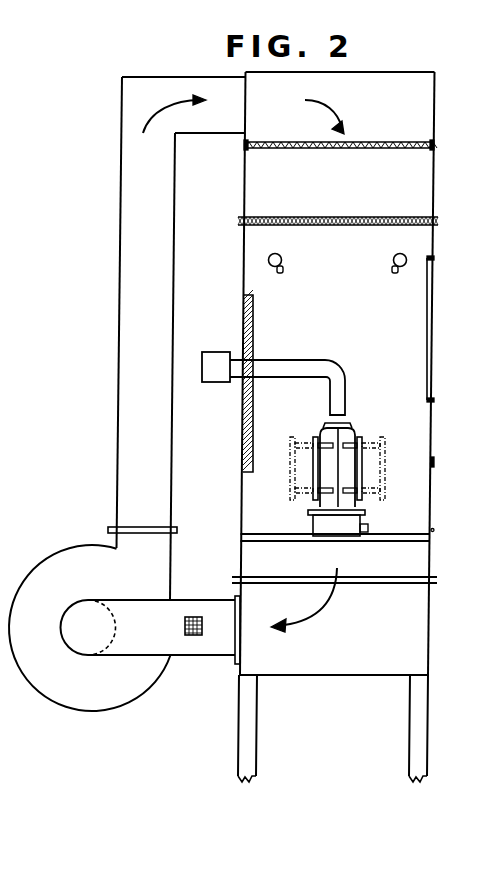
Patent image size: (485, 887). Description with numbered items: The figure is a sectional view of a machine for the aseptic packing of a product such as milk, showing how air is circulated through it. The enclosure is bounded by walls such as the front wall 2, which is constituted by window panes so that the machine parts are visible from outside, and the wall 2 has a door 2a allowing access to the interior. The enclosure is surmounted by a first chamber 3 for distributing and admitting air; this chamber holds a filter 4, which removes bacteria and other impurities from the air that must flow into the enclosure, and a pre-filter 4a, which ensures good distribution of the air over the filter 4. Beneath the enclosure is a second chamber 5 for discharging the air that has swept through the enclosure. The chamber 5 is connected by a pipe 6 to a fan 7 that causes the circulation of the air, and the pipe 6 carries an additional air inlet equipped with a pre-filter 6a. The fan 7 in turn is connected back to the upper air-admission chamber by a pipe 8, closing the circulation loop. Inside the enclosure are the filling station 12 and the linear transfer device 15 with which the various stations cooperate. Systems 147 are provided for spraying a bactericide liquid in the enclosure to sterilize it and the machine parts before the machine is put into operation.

The front wall 2 is at (432, 347).
The door 2a is at (432, 497).
The first chamber 3 is at (437, 110).
The filter 4 is at (353, 217).
The pre-filter 4a is at (358, 142).
The second chamber 5 is at (430, 643).
The pipe 6 is at (207, 647).
The pre-filter 6a is at (194, 617).
The fan 7 is at (124, 677).
The pipe 8 is at (155, 485).
The filling station 12 is at (343, 368).
The linear transfer device 15 is at (362, 429).
The spraying systems 147 is at (393, 262).